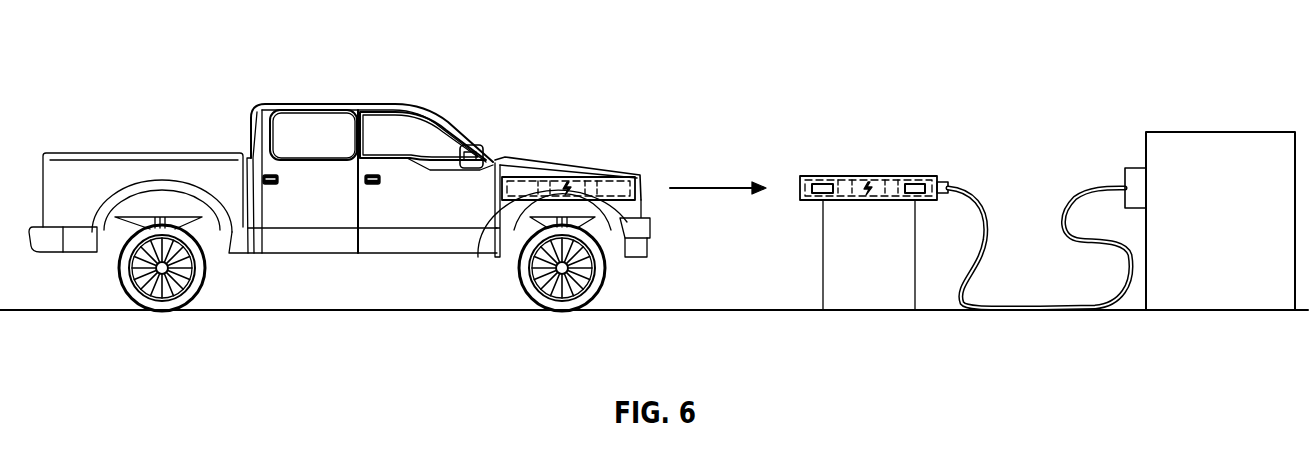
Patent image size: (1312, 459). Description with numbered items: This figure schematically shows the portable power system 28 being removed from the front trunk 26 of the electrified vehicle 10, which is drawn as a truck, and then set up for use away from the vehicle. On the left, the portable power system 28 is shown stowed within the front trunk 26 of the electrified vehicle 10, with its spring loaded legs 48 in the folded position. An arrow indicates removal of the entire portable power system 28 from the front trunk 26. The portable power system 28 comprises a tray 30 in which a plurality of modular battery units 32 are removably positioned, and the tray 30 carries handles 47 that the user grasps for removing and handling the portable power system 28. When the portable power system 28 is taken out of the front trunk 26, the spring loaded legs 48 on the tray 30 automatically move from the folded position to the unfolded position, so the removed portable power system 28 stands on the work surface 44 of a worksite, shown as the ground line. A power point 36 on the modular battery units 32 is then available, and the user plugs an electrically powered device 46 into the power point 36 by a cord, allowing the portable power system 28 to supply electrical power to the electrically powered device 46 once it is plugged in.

The electrified vehicle 10 is at (339, 172).
The front trunk 26 is at (533, 173).
The portable power system 28 is at (742, 219).
The tray 30 is at (800, 197).
The modular battery units 32 is at (821, 177).
The power point 36 is at (951, 179).
The work surface 44 is at (937, 313).
The electrically powered devices 46 is at (1220, 132).
The handles 47 is at (814, 177).
The spring loaded legs 48 is at (823, 248).